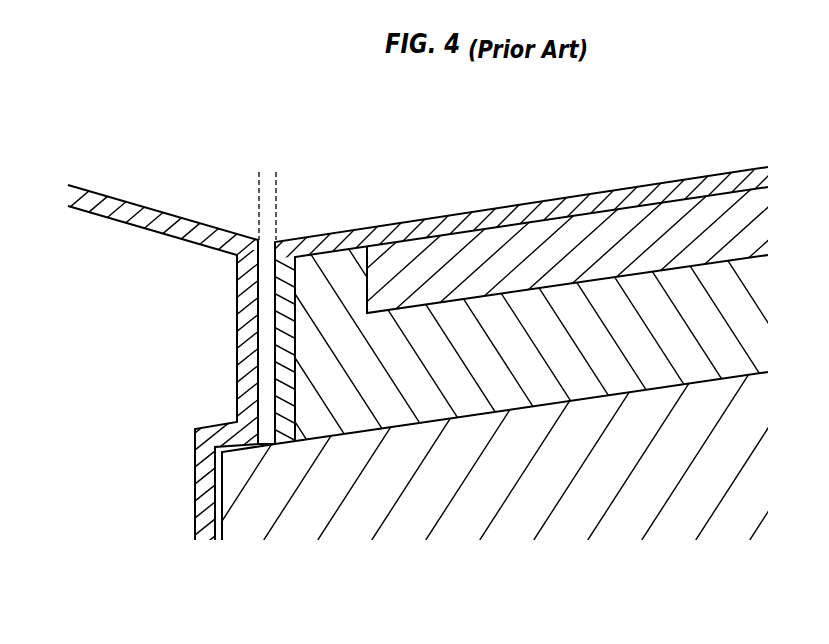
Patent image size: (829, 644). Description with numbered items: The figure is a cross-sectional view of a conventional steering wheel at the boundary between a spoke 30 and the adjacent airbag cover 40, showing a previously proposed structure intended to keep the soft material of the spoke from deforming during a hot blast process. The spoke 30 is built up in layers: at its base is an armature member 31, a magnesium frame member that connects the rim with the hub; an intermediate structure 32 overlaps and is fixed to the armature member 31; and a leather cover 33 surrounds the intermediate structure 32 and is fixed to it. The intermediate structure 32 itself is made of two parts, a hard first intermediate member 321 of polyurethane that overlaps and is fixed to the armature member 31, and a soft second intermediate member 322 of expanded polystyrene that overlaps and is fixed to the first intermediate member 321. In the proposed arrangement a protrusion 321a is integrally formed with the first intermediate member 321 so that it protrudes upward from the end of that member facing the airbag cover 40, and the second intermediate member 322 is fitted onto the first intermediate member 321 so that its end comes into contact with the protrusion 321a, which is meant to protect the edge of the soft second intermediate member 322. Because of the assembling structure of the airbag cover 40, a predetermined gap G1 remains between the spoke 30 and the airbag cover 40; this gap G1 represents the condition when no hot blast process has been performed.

The spoke 30 is at (492, 351).
The armature member 31 is at (622, 510).
The intermediate structure 32 is at (503, 285).
The first intermediate member 321 is at (543, 310).
The protrusion 321a is at (337, 285).
The second intermediate member 322 is at (470, 250).
The cover 33 is at (710, 178).
The airbag cover 40 is at (132, 205).
The gap G1 is at (233, 183).